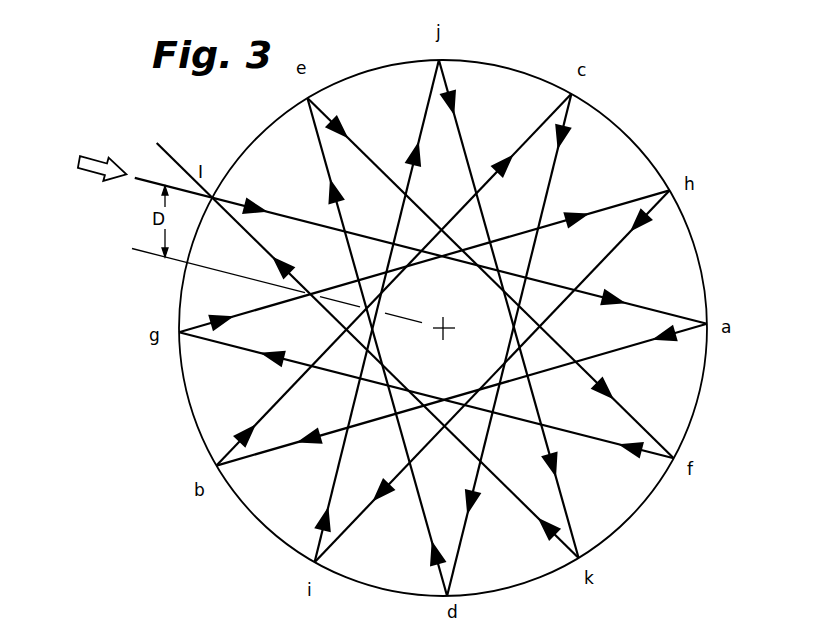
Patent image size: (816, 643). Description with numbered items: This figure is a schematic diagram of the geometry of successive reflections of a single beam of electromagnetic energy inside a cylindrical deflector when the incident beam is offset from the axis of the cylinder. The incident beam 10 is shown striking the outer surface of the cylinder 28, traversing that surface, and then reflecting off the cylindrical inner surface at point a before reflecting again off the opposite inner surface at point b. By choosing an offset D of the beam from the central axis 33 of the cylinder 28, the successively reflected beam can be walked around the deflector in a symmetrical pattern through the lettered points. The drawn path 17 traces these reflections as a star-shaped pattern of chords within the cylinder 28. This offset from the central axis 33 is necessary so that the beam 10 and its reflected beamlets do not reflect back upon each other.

The incident beam 10 is at (82, 155).
The beam path 17 is at (173, 158).
The cylinder 28 is at (626, 132).
The central axis 33 is at (447, 325).